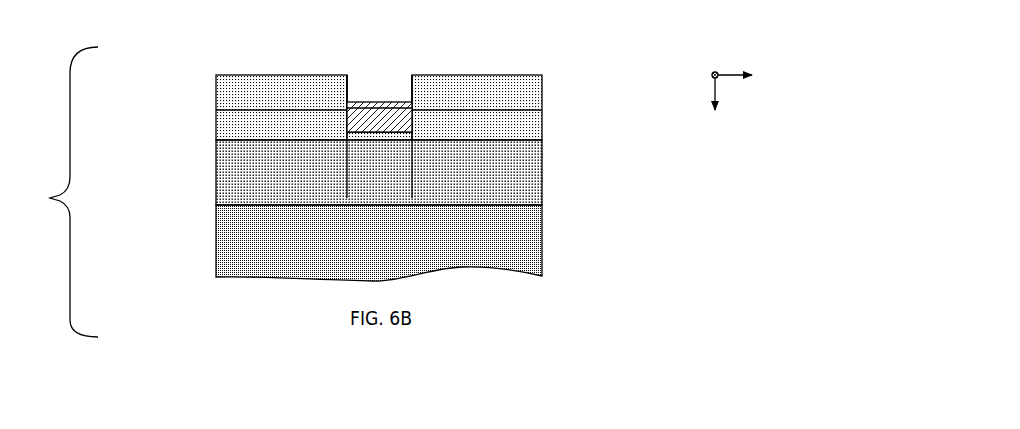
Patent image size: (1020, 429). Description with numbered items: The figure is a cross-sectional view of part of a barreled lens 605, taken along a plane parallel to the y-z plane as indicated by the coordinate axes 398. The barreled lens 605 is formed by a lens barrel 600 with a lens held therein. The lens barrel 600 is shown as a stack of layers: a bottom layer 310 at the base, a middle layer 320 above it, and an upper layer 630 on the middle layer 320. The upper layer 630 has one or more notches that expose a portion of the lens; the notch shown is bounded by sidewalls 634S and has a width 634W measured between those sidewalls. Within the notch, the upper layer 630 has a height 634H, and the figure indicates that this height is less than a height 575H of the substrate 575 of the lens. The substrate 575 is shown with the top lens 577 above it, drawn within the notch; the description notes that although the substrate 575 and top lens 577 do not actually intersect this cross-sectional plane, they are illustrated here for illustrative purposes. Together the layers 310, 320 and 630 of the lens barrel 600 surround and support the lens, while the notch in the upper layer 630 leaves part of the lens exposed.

The lens barrel 600 is at (151, 136).
The barreled lens 605 is at (55, 192).
The upper layer 630 is at (216, 97).
The substrate 575 is at (346, 135).
The height of substrate 575H is at (267, 113).
The top lens 577 is at (352, 105).
The sidewalls 634S is at (348, 86).
The height 634H is at (428, 158).
The width 634W is at (434, 175).
The middle layer 320 is at (534, 186).
The bottom layer 310 is at (394, 248).
The coordinate axes 398 is at (757, 155).